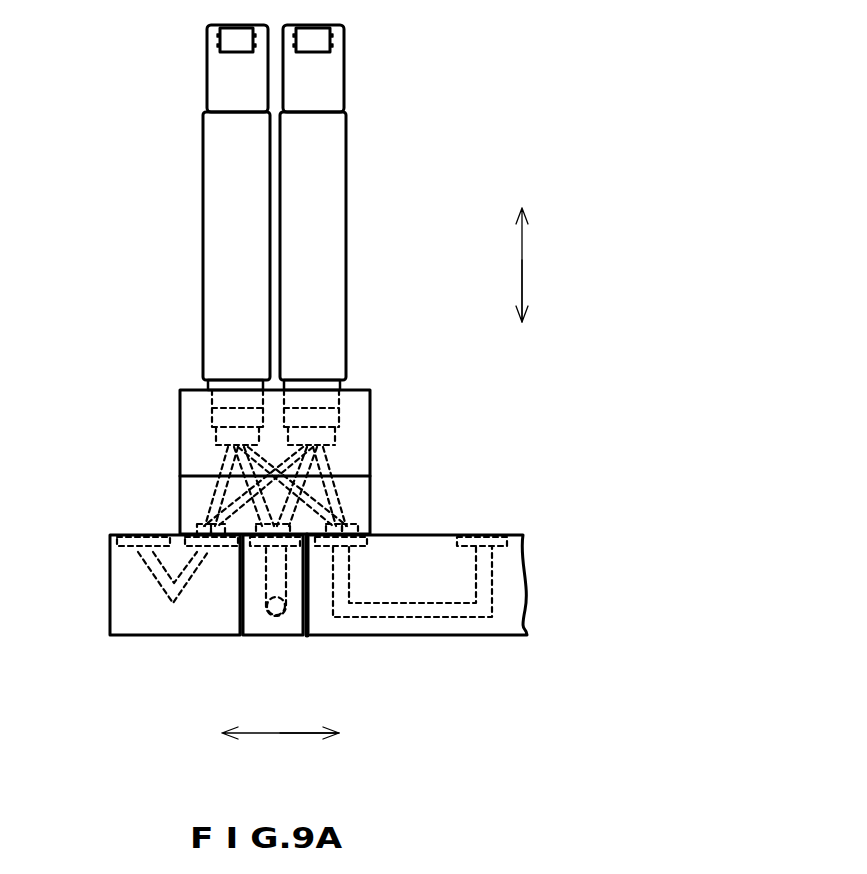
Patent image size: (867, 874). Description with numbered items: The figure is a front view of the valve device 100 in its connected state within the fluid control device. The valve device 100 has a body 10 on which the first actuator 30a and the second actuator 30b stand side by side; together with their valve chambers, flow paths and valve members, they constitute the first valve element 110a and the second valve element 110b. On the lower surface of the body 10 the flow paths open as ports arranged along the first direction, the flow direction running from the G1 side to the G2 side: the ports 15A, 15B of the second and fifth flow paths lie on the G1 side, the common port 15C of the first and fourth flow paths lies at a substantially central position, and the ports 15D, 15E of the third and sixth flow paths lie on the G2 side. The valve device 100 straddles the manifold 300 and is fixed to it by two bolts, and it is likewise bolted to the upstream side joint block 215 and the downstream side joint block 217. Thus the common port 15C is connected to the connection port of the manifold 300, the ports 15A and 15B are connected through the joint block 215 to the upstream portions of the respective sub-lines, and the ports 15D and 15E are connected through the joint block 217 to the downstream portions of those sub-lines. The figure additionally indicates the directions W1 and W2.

The valve device 100 is at (418, 147).
The first actuator 30a is at (218, 222).
The second actuator 30b is at (330, 221).
The first valve element 110a is at (168, 332).
The second valve element 110b is at (363, 330).
The body 10 is at (370, 410).
The port 15A is at (198, 527).
The port 15B is at (198, 527).
The common port 15C is at (300, 524).
The port 15D is at (360, 526).
The port 15E is at (360, 526).
The joint block 215 is at (185, 635).
The manifold 300 is at (285, 635).
The joint block 217 is at (412, 635).
The first direction W1 is at (520, 249).
The second direction W2 is at (520, 308).
The one end side G1 is at (267, 734).
The other end side G2 is at (327, 734).